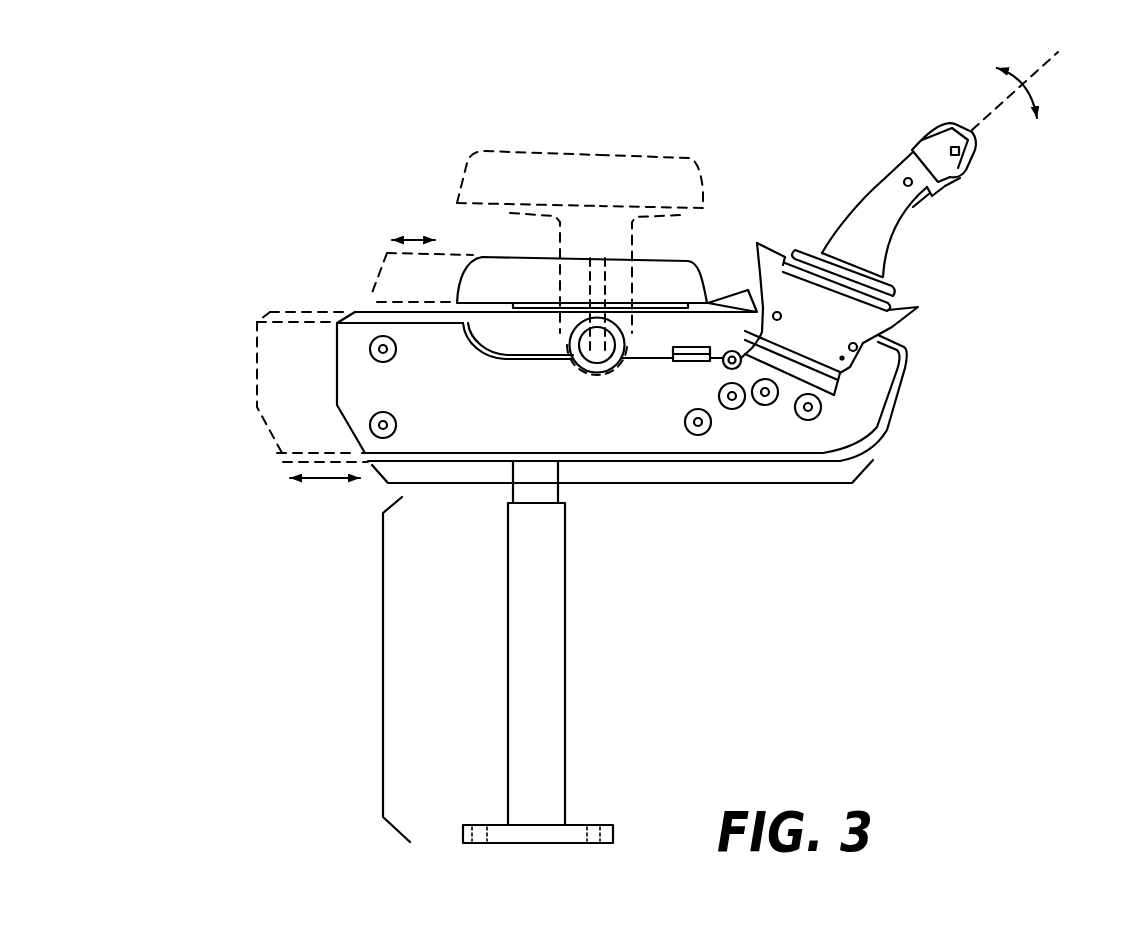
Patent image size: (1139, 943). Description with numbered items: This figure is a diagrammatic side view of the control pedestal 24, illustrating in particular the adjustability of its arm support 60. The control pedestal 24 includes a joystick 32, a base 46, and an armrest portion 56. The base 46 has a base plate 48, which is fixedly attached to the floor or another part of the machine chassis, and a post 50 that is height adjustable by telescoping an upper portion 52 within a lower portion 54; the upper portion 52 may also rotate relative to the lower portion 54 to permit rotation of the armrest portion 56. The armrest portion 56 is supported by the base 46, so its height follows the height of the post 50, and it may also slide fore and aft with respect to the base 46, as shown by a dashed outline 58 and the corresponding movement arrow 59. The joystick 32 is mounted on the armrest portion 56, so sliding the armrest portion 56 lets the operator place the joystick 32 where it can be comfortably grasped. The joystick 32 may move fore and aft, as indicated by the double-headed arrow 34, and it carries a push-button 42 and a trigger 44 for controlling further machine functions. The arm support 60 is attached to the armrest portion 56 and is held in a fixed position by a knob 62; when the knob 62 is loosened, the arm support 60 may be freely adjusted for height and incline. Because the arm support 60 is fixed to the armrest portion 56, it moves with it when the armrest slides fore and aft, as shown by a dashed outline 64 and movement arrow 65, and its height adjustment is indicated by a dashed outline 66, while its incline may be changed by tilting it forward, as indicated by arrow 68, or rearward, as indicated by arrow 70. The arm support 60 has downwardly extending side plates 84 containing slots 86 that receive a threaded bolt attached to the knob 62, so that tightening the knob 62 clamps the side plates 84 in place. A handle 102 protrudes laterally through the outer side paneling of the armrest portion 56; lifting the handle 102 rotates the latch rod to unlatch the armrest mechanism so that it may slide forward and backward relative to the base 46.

The control pedestal 24 is at (237, 128).
The joystick 32 is at (866, 187).
The double-headed arrow 34 is at (1036, 101).
The push-button 42 is at (916, 133).
The trigger 44 is at (927, 187).
The base 46 is at (383, 670).
The base plate 48 is at (500, 830).
The post 50 is at (485, 643).
The upper portion 52 is at (518, 490).
The lower portion 54 is at (513, 548).
The armrest portion 56 is at (776, 487).
The dashed outline 58 is at (303, 312).
The movement arrow 59 is at (318, 483).
The arm support 60 is at (493, 263).
The knob 62 is at (580, 378).
The dashed outline 64 is at (380, 276).
The movement arrow 65 is at (413, 238).
The dashed outline 66 is at (517, 147).
The arrow 68 is at (757, 205).
The arrow 70 is at (450, 176).
The side plates 84 is at (622, 237).
The slots 86 is at (607, 248).
The handle 102 is at (693, 358).